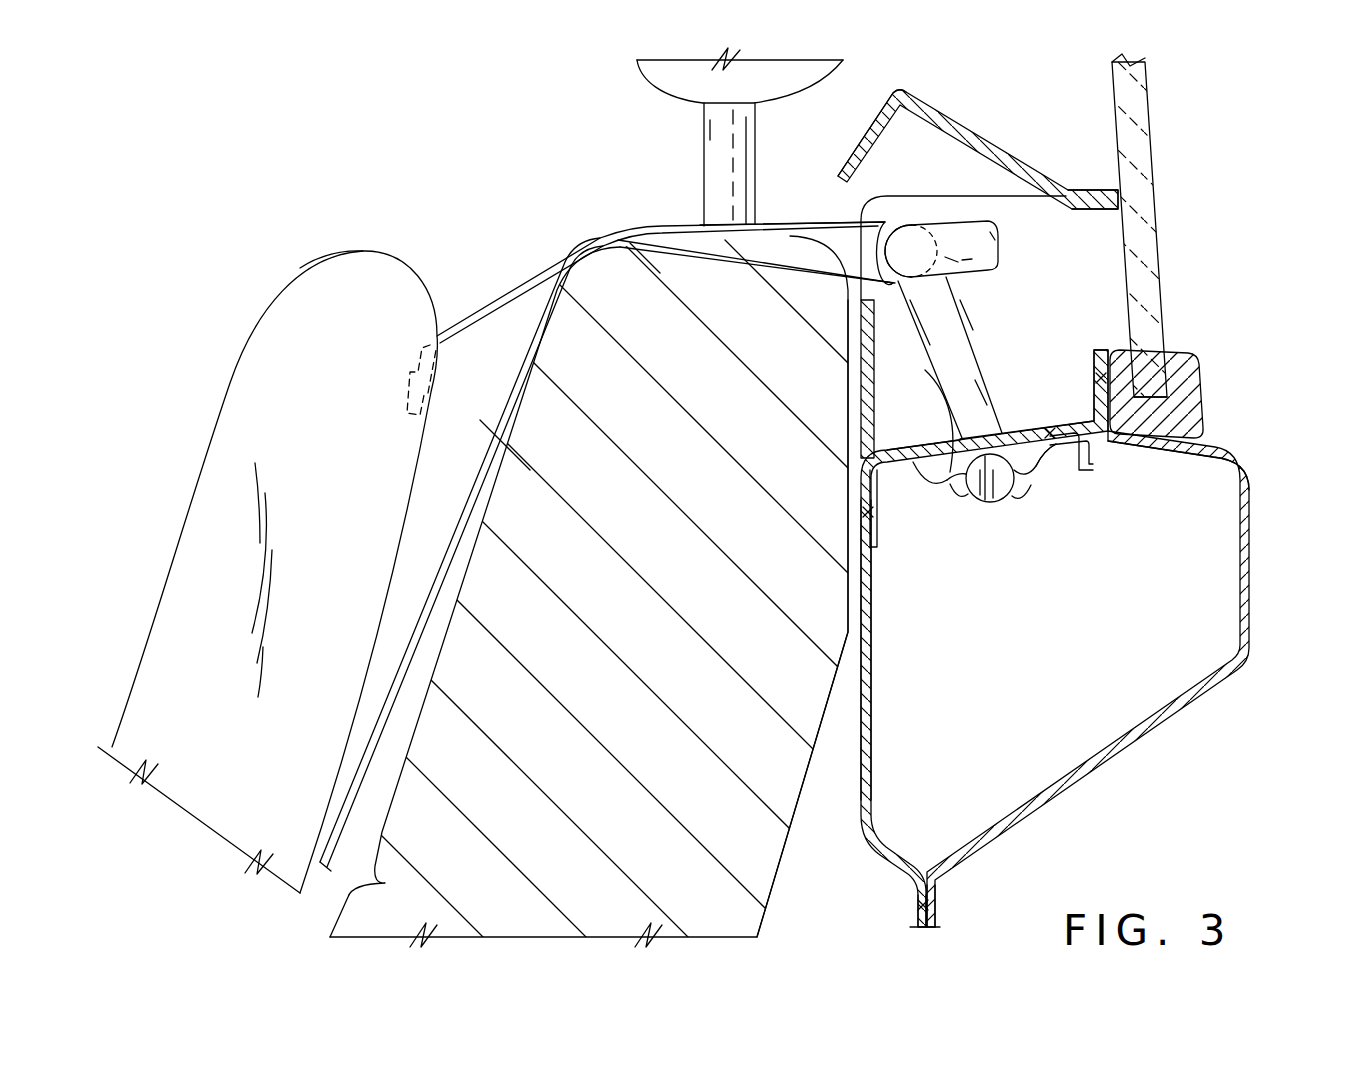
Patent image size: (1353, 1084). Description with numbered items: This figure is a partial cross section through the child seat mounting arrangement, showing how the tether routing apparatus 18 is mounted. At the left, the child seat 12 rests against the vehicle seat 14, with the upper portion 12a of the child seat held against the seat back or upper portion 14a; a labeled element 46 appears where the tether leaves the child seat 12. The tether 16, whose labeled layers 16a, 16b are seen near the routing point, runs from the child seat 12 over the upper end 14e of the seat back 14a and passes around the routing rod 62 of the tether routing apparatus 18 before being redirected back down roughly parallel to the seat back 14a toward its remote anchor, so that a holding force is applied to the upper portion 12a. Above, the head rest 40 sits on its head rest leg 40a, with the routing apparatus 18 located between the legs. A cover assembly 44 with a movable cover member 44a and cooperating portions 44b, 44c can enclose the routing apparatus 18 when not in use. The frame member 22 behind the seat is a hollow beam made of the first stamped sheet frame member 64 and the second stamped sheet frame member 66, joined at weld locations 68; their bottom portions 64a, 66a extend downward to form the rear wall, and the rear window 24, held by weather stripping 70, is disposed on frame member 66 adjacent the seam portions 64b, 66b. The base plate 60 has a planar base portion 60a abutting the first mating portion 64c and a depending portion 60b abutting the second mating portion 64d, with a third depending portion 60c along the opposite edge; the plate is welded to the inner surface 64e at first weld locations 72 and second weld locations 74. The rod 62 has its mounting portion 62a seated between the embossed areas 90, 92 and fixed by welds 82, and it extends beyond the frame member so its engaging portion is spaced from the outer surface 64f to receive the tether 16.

The child seat 12 is at (270, 302).
The upper portion of the child seat 12a is at (328, 280).
The vehicle seat 14 is at (393, 773).
The seat back or upper portion 14a is at (520, 490).
The upper end of the upper seat back 14e is at (657, 252).
The tether 16 is at (497, 296).
The trim cover lower layer 16a is at (783, 266).
The trim cover upper layer 16b is at (790, 226).
The tether routing apparatus 18 is at (972, 228).
The frame member 22 is at (850, 742).
The rear window 24 is at (1134, 110).
The head rest 40 is at (645, 70).
The head rest leg 40a is at (713, 130).
The cover assembly 44 is at (967, 122).
The movable cover member 44a is at (930, 112).
The cover portion 44b is at (857, 382).
The cover portion 44c is at (1097, 200).
The fastener 46 is at (408, 393).
The base plate 60 is at (1097, 470).
The first generally planar base portion 60a is at (1030, 470).
The second depending portion 60b is at (860, 490).
The third depending portion 60c is at (1212, 450).
The rigid routing rod 62 is at (963, 322).
The mounting portion of the rod 62a is at (1000, 505).
The first stamped sheet frame member 64 is at (857, 800).
The bottom portion of the first frame member 64a is at (915, 926).
The seam portion of the first frame member 64b is at (1092, 365).
The first mating portion 64c is at (1038, 500).
The second mating portion 64d is at (872, 640).
The first inner surface 64e is at (915, 465).
The second outer surface 64f is at (910, 445).
The second stamped sheet frame member 66 is at (1082, 778).
The bottom portion of the second frame member 66a is at (940, 920).
The seam portion of the second frame member 66b is at (1160, 350).
The weld locations 68 is at (1094, 378).
The weather stripping 70 is at (1193, 400).
The first plurality of spaced apart weld locations 72 is at (1052, 432).
The second plurality of spaced apart weld locations 74 is at (862, 512).
The welds 82 is at (957, 492).
The embossed area 90 is at (925, 372).
The embossed area 92 is at (1045, 463).